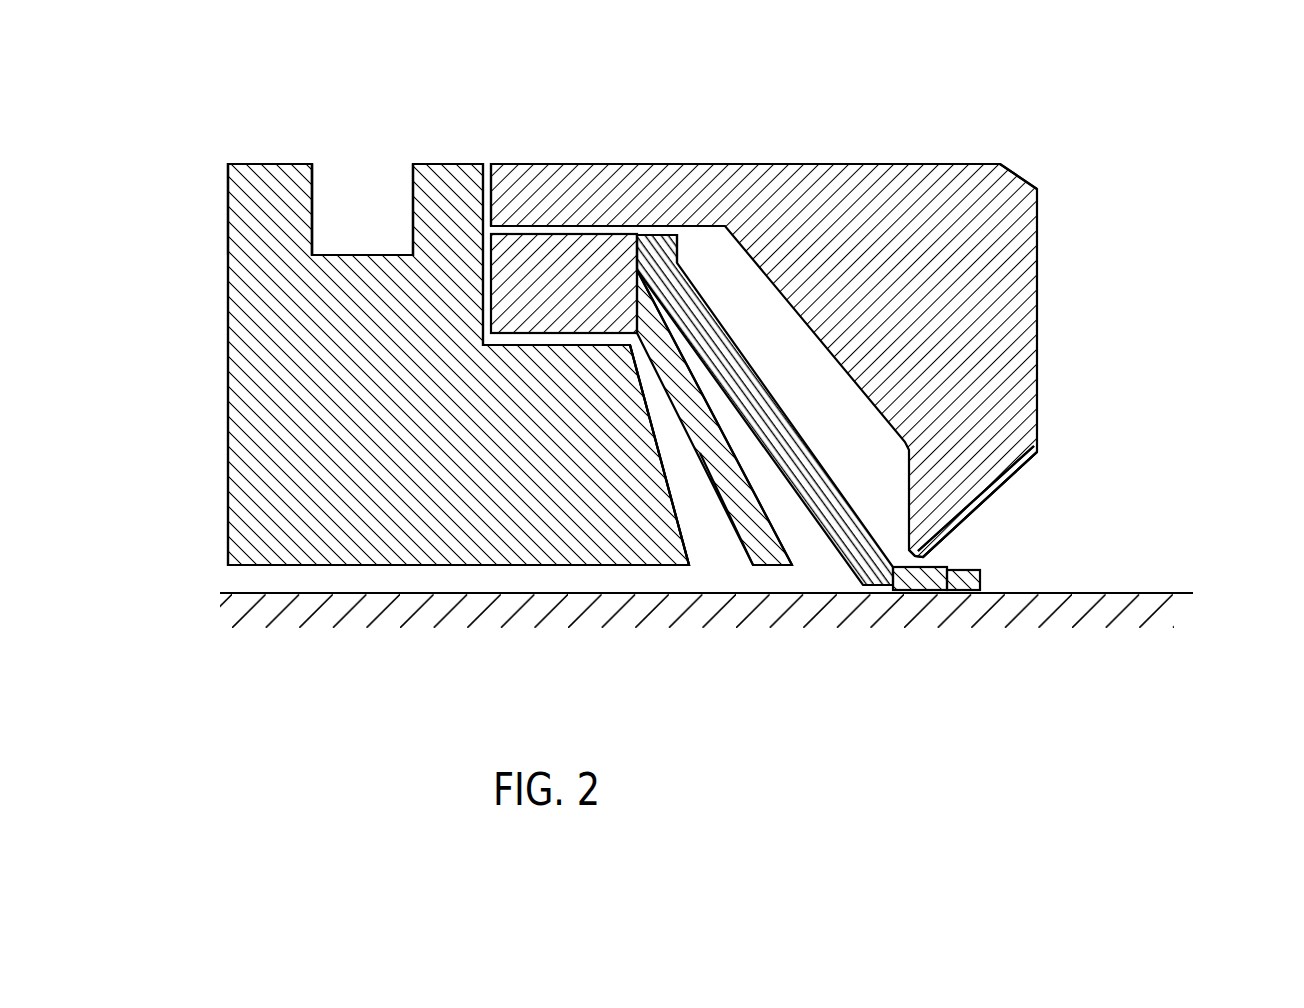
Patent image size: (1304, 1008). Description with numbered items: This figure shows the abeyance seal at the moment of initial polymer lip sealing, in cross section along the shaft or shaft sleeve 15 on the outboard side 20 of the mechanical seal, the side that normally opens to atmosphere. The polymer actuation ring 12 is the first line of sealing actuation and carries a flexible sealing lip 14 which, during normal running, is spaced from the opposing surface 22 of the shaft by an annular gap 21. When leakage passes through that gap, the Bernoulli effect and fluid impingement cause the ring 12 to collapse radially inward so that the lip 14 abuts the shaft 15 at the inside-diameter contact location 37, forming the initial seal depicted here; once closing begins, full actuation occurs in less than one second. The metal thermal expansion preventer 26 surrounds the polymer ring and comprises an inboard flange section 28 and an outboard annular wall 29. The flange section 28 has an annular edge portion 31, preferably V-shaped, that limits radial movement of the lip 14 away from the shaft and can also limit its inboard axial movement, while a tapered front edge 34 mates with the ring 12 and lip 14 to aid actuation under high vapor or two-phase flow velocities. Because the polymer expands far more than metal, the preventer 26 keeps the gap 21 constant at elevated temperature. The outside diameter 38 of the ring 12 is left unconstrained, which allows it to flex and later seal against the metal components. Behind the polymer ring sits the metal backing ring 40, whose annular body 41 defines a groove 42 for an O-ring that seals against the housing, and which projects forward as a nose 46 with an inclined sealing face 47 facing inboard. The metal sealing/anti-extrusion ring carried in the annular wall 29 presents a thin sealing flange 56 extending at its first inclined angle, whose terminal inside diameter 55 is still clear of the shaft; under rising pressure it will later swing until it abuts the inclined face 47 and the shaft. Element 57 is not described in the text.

The polymer actuation ring 12 is at (779, 379).
The flexible sealing lip 14 is at (948, 572).
The shaft or shaft sleeve 15 is at (538, 679).
The outboard side 20 is at (248, 581).
The annular gap 21 is at (1078, 586).
The opposing surface of the shaft 22 is at (1182, 593).
The thermal expansion preventer 26 is at (969, 154).
The inboard flange section 28 is at (1050, 193).
The outboard annular wall 29 is at (568, 154).
The annular edge portion 31 is at (907, 570).
The tapered front edge 34 is at (1005, 487).
The contact location 37 is at (992, 612).
The outside diameter 38 is at (658, 234).
The metal backing ring 40 is at (251, 154).
The annular body 41 is at (335, 550).
The groove 42 is at (408, 172).
The nose 46 is at (652, 567).
The inclined sealing face 47 is at (684, 533).
The inside diameter 55 is at (773, 565).
The sealing flange 56 is at (752, 577).
The strip right face 57 is at (780, 533).